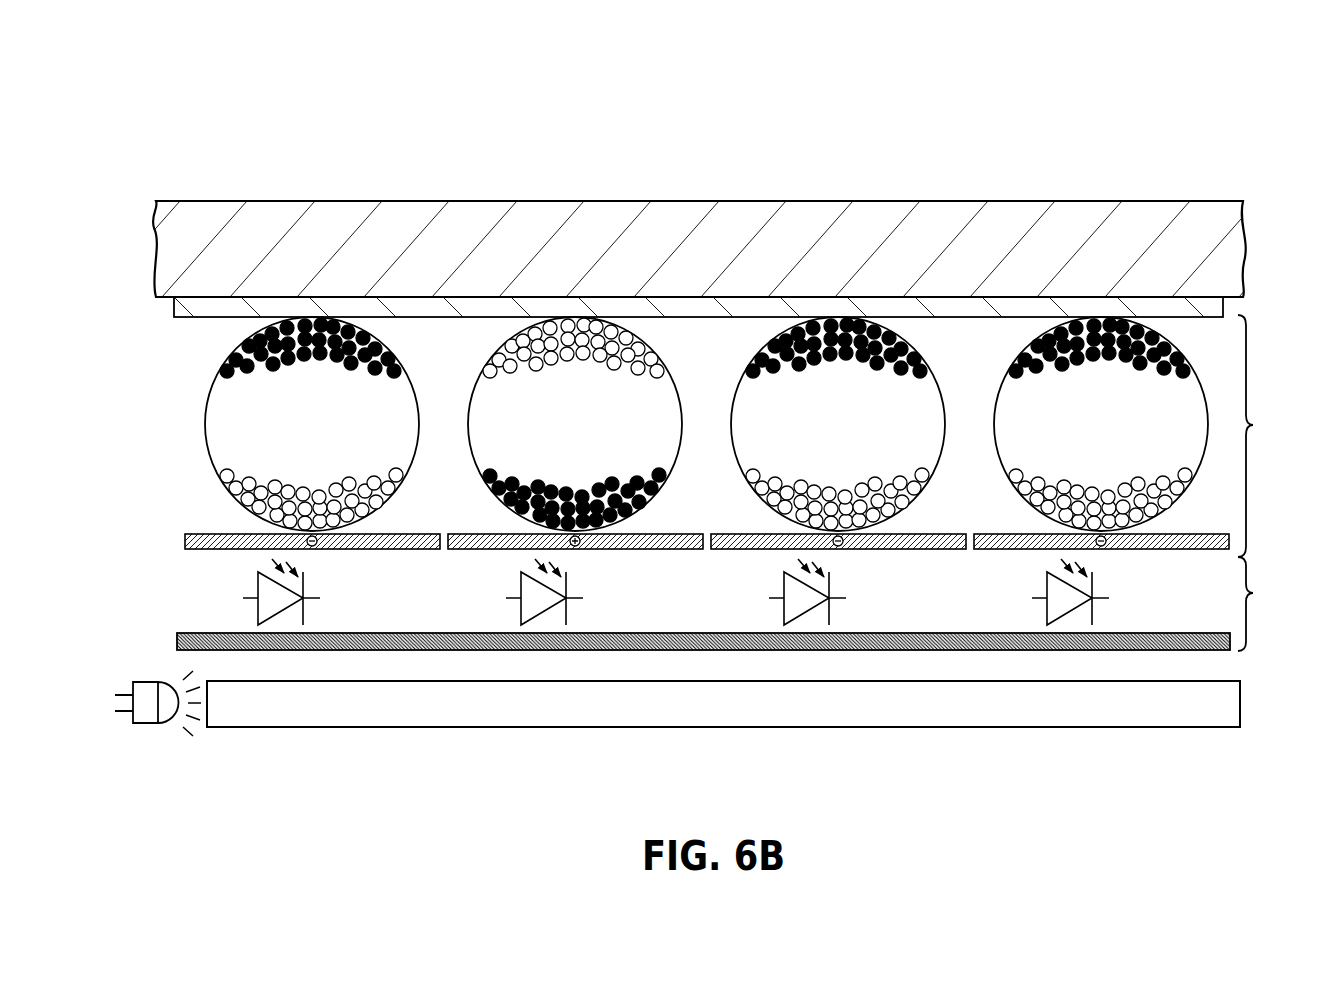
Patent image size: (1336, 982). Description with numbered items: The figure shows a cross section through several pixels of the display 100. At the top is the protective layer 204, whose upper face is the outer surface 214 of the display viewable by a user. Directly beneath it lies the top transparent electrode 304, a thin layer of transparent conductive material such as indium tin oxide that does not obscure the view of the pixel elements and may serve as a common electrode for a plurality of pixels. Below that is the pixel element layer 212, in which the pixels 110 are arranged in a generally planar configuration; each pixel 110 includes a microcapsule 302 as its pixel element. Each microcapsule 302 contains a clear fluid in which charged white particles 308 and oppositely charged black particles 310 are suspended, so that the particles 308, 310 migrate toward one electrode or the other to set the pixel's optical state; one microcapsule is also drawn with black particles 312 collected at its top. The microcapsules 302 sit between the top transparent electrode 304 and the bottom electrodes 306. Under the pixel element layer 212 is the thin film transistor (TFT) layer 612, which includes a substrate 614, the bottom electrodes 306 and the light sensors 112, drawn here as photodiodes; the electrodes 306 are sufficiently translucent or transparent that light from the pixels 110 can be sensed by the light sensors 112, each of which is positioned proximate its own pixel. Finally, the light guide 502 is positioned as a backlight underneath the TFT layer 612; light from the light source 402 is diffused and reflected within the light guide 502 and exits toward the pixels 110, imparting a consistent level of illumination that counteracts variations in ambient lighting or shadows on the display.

The display 100 is at (140, 92).
The outer surface 214 is at (667, 188).
The protective layer 204 is at (753, 201).
The top transparent electrode 304 is at (173, 302).
The pixel 110 is at (200, 357).
The microcapsule 302 is at (294, 434).
The white particles 308 is at (311, 481).
The black particles 310 is at (317, 364).
The black particles 312 is at (1106, 364).
The bottom electrode 306 is at (252, 553).
The light sensor 112 is at (257, 612).
The pixel element layer 212 is at (1250, 425).
The thin film transistor (TFT) layer 612 is at (1251, 593).
The substrate 614 is at (177, 651).
The light guide 502 is at (723, 704).
The light source 402 is at (150, 723).